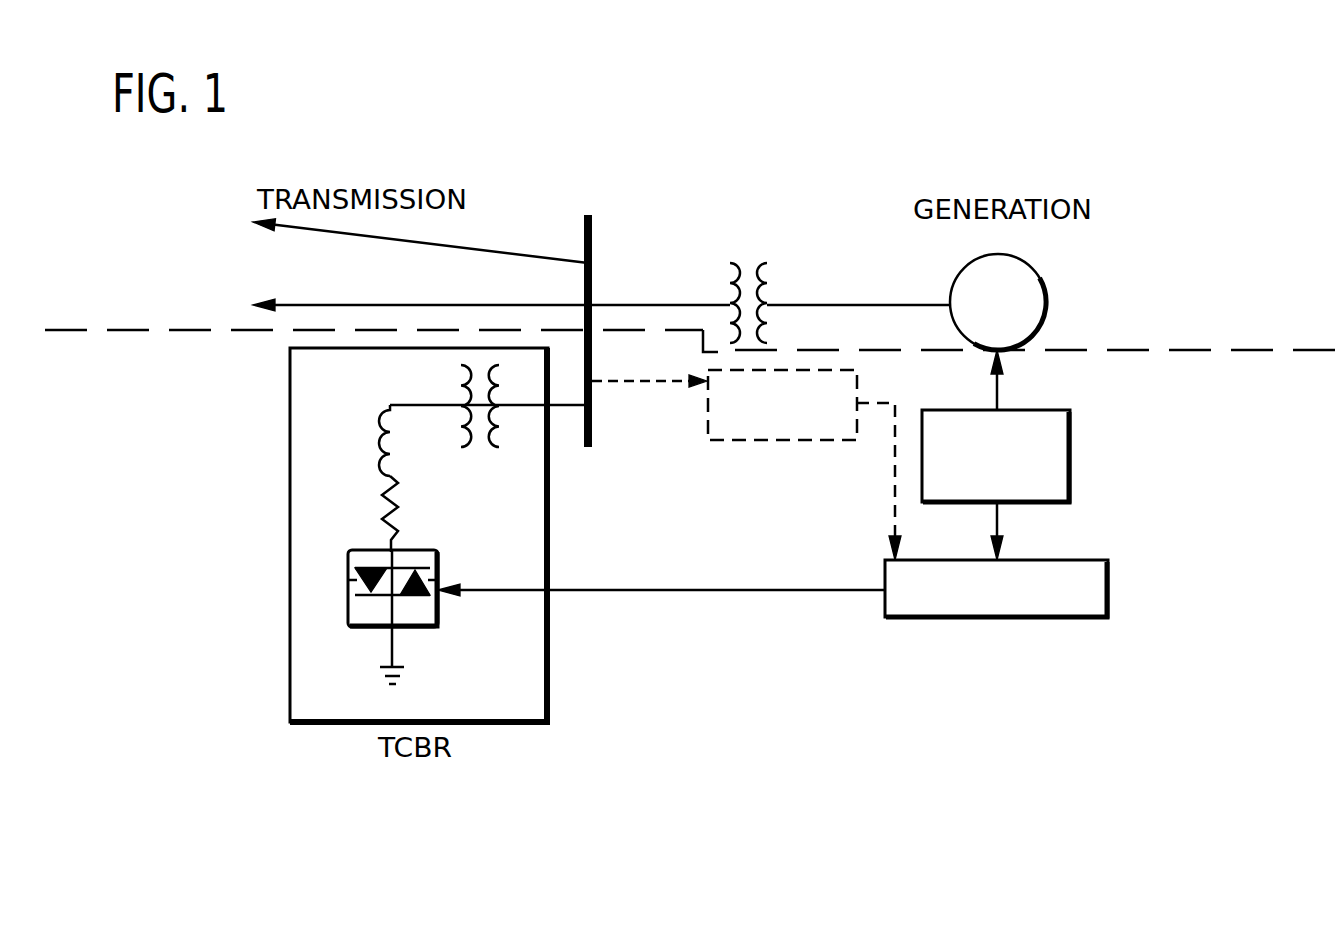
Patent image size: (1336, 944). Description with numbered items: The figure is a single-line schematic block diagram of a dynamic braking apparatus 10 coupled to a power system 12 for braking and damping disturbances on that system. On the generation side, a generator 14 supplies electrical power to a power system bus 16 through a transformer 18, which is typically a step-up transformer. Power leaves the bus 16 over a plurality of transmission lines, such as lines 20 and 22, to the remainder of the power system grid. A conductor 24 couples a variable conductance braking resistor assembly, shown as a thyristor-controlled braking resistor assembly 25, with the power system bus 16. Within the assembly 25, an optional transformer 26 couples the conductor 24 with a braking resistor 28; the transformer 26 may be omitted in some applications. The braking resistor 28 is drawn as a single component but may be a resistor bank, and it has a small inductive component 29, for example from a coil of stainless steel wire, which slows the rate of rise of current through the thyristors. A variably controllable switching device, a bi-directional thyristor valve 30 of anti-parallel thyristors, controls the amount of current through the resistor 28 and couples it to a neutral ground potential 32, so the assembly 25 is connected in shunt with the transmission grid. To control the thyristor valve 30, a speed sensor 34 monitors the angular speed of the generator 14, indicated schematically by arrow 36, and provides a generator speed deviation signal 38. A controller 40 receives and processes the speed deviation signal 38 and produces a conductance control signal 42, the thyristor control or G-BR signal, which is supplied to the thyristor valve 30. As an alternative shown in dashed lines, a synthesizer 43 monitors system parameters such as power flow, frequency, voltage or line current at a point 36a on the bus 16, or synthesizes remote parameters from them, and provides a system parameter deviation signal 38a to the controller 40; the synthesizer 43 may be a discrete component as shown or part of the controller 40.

The dynamic braking apparatus 10 is at (124, 445).
The power system 12 is at (130, 254).
The generator 14 is at (1028, 289).
The power system bus 16 is at (593, 235).
The transformer 18 is at (768, 244).
The transmission line 20 is at (407, 243).
The transmission line 22 is at (318, 304).
The conductor 24 is at (562, 407).
The thyristor-controlled braking resistor assembly 25 is at (533, 684).
The transformer 26 is at (491, 465).
The braking resistor 28 is at (395, 505).
The inductive component 29 is at (380, 430).
The thyristor valve 30 is at (358, 618).
The neutral ground potential 32 is at (400, 666).
The speed sensor 34 is at (1058, 448).
The arrow 36 is at (1000, 380).
The monitoring point 36a is at (627, 383).
The generator speed deviation signal 38 is at (1000, 522).
The system parameter deviation signal 38a is at (893, 480).
The controller 40 is at (1110, 572).
The conductance control signal 42 is at (789, 591).
The synthesizer 43 is at (790, 423).